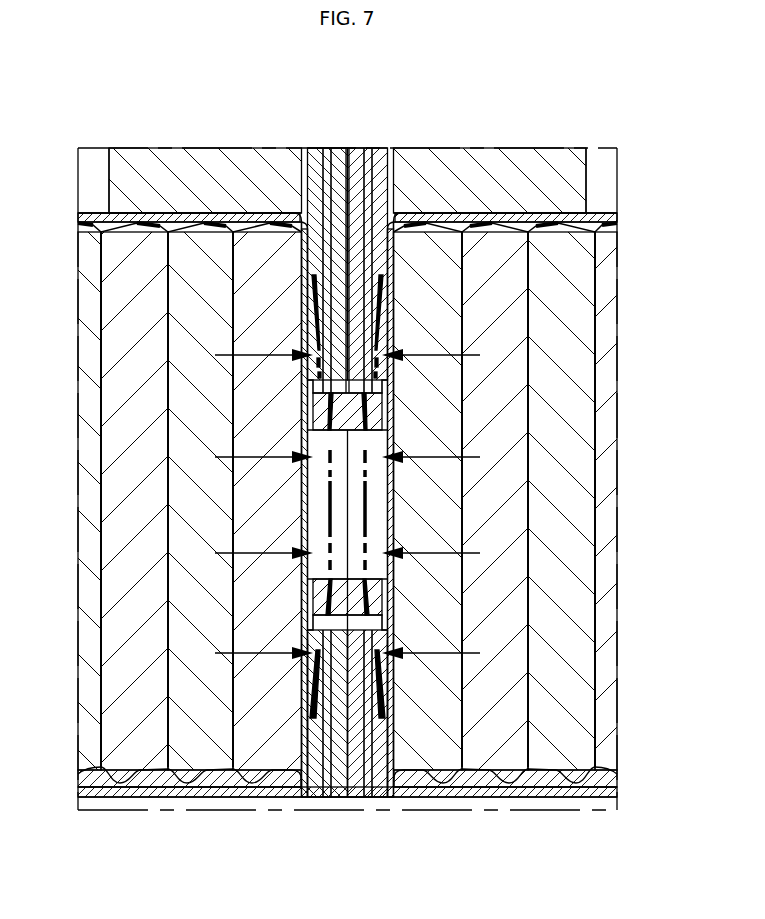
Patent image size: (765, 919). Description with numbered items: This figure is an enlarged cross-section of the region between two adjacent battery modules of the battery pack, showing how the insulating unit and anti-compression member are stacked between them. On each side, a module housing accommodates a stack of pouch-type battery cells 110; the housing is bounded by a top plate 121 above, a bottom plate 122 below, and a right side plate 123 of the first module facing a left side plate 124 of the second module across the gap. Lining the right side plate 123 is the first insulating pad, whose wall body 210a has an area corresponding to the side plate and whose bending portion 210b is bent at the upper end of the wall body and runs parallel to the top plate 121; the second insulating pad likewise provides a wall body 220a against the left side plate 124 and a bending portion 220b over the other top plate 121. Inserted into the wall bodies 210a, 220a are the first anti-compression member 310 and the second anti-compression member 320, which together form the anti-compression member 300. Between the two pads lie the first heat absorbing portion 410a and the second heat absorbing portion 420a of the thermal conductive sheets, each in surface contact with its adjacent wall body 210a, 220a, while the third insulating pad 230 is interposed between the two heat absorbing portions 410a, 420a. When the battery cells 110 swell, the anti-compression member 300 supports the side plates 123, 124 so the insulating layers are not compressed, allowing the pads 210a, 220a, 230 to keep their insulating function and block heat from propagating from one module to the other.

The battery cell 110 is at (133, 750).
The top plate 121 is at (90, 214).
The bottom plate 122 is at (103, 790).
The right side plate 123 is at (302, 706).
The left side plate 124 is at (393, 706).
The wall body 210a is at (312, 797).
The bending portion 210b is at (218, 170).
The wall body 220a is at (386, 797).
The bending portion 220b is at (477, 170).
The third insulating pad 230 is at (347, 797).
The anti-compression member 300 is at (397, 102).
The first anti-compression member 310 is at (301, 405).
The second anti-compression member 320 is at (394, 405).
The first heat absorbing portion 410a is at (326, 797).
The second heat absorbing portion 420a is at (368, 797).